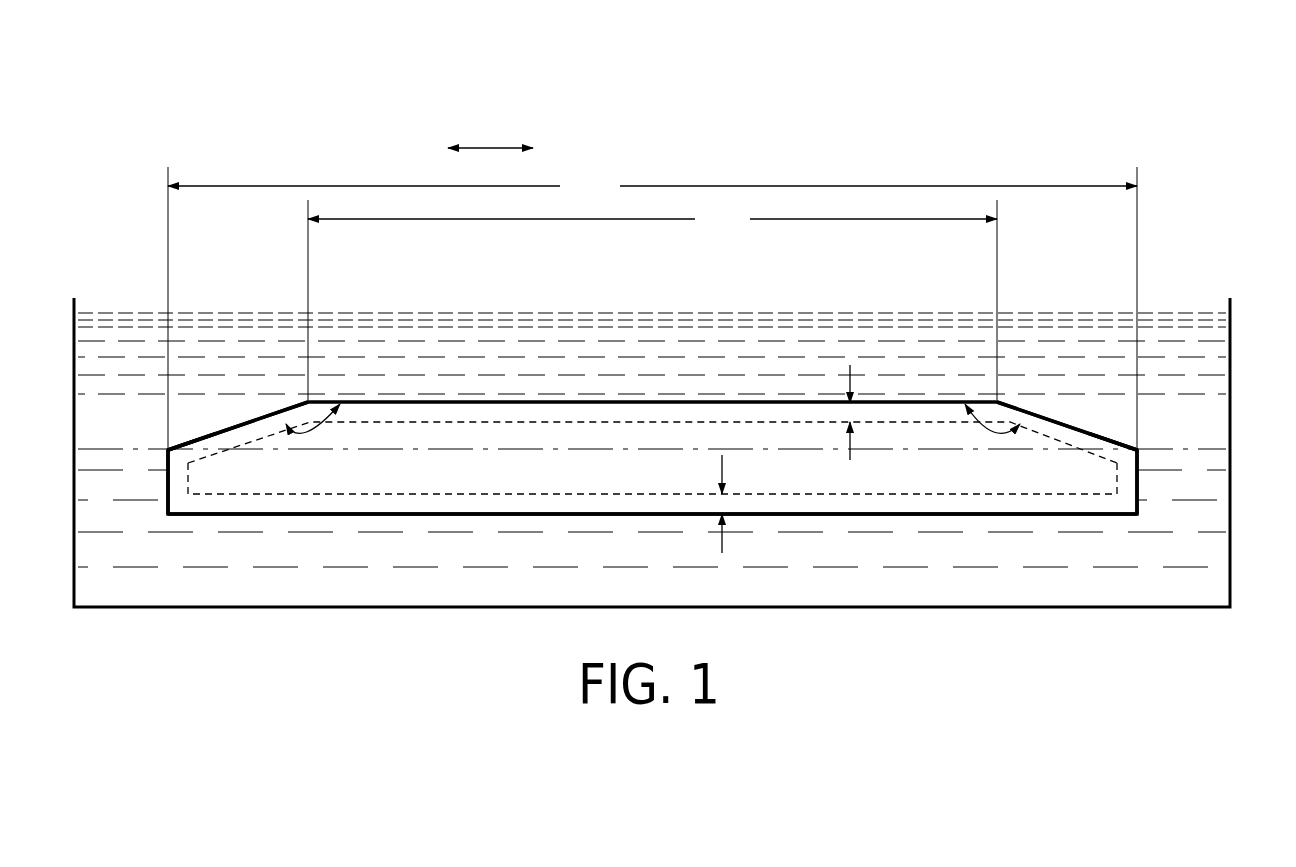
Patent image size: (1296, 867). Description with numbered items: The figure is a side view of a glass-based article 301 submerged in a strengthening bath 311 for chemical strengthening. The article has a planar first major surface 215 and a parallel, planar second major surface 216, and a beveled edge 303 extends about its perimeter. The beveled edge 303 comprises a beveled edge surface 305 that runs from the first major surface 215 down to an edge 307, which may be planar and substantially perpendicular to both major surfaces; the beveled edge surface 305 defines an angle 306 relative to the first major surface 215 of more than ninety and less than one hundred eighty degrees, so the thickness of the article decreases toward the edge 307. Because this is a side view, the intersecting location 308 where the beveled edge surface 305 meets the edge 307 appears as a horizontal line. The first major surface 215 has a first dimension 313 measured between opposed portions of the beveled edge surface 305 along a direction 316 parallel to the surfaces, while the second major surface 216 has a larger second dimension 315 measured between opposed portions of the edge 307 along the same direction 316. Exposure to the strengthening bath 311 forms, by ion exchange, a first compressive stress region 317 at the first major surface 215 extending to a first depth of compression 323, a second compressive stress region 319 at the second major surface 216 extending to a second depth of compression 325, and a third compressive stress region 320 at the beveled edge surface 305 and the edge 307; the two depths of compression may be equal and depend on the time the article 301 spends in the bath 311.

The glass-based article 301 is at (1152, 205).
The beveled edge 303 is at (196, 378).
The beveled edge surface 305 is at (232, 420).
The angle 306 is at (312, 438).
The edge 307 is at (170, 484).
The intersecting location 308 is at (1143, 455).
The strengthening bath 311 is at (593, 338).
The first dimension 313 is at (652, 300).
The second dimension 315 is at (652, 308).
The direction 316 is at (505, 148).
The first compressive stress region 317 is at (764, 413).
The second compressive stress region 319 is at (971, 505).
The third compressive stress region 320 is at (212, 445).
The first depth of compression 323 is at (850, 423).
The second depth of compression 325 is at (722, 490).
The first major surface 215 is at (488, 400).
The second major surface 216 is at (443, 517).